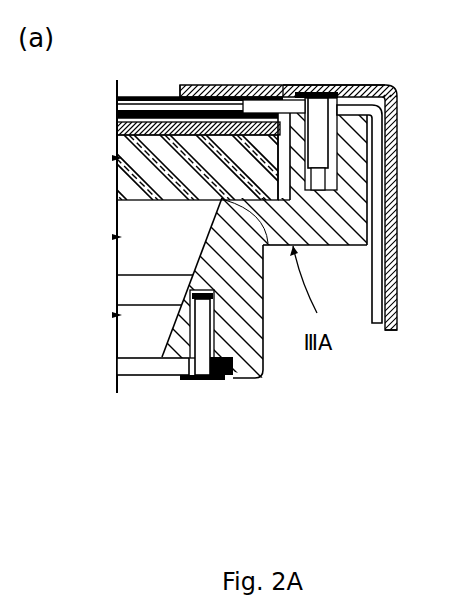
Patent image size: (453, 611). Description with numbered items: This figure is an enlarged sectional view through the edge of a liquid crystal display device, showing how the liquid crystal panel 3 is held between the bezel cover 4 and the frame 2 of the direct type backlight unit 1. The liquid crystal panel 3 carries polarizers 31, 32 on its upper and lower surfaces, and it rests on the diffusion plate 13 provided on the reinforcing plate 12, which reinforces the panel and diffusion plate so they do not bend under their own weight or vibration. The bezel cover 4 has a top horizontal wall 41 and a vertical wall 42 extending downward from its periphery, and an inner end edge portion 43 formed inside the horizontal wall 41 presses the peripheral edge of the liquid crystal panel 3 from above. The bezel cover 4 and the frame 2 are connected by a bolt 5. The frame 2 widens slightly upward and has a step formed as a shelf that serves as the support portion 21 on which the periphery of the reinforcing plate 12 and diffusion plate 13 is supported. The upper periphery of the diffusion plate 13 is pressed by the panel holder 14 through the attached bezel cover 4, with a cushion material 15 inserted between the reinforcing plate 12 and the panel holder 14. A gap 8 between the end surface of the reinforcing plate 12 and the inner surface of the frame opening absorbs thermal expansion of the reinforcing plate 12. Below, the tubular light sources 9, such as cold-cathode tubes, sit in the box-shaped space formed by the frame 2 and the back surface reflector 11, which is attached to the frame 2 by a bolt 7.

The backlight unit 1 is at (130, 325).
The frame 2 is at (247, 377).
The liquid crystal panel 3 is at (117, 100).
The bezel cover 4 is at (388, 88).
The bolt 5 is at (318, 100).
The bolt 7 is at (200, 362).
The gap 8 is at (292, 218).
The tubular light source 9 is at (133, 278).
The back surface reflector 11 is at (140, 373).
The reinforcing plate 12 is at (117, 187).
The diffusion plate 13 is at (117, 126).
The panel holder 14 is at (377, 135).
The cushion material 15 is at (237, 102).
The support portion 21 is at (268, 243).
The polarizer 31 is at (137, 97).
The polarizer 32 is at (117, 112).
The horizontal wall 41 is at (280, 87).
The vertical wall 42 is at (398, 325).
The inner end edge portion 43 is at (200, 85).